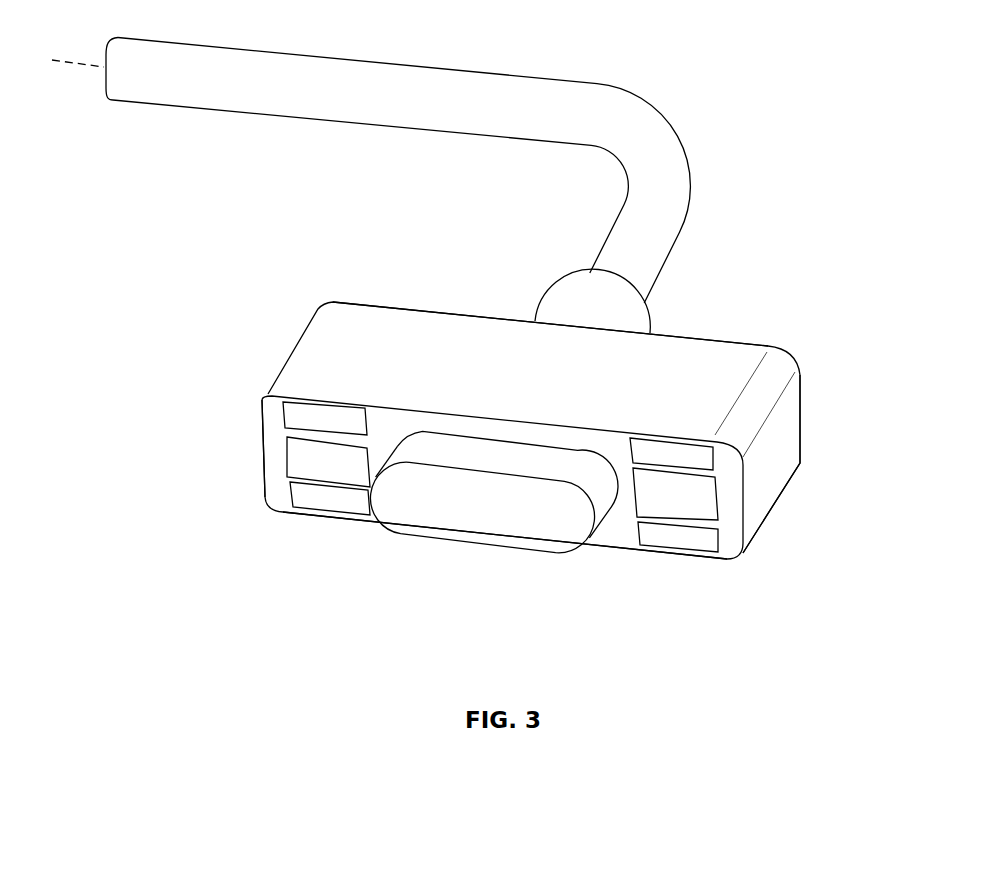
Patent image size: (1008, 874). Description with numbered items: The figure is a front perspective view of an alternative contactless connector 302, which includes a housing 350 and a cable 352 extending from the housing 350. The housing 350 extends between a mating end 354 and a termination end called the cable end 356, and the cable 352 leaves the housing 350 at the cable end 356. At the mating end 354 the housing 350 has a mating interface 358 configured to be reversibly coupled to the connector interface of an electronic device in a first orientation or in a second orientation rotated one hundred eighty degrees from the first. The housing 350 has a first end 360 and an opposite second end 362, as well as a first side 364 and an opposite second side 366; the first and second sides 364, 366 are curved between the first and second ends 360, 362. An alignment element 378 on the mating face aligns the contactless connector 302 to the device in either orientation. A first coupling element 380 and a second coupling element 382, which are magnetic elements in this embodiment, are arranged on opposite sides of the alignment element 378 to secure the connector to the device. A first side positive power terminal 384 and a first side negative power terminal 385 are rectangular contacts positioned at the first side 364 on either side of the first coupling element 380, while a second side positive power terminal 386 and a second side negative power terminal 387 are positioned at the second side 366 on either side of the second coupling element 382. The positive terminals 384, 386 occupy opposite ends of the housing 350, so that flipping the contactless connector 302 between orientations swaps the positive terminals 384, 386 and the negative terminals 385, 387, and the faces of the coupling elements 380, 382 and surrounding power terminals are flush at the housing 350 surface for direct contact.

The contactless connector 302 is at (278, 560).
The housing 350 is at (745, 360).
The cable 352 is at (633, 128).
The mating end 354 is at (503, 578).
The cable end 356 is at (723, 300).
The mating interface 358 is at (232, 472).
The first end 360 is at (415, 332).
The second end 362 is at (618, 552).
The first side 364 is at (802, 428).
The second side 366 is at (260, 443).
The alignment element 378 is at (447, 518).
The first coupling element 380 is at (718, 500).
The second coupling element 382 is at (287, 462).
The first side positive power terminal 384 is at (708, 553).
The first side negative power terminal 385 is at (743, 447).
The second side positive power terminal 386 is at (307, 400).
The second side negative power terminal 387 is at (338, 517).